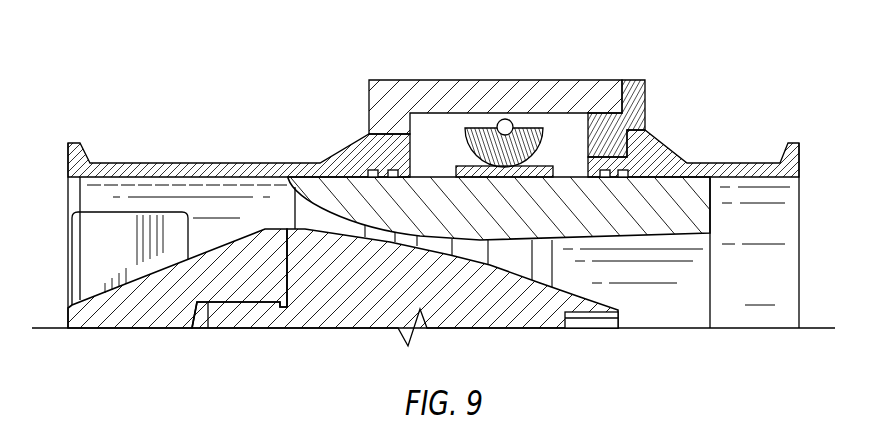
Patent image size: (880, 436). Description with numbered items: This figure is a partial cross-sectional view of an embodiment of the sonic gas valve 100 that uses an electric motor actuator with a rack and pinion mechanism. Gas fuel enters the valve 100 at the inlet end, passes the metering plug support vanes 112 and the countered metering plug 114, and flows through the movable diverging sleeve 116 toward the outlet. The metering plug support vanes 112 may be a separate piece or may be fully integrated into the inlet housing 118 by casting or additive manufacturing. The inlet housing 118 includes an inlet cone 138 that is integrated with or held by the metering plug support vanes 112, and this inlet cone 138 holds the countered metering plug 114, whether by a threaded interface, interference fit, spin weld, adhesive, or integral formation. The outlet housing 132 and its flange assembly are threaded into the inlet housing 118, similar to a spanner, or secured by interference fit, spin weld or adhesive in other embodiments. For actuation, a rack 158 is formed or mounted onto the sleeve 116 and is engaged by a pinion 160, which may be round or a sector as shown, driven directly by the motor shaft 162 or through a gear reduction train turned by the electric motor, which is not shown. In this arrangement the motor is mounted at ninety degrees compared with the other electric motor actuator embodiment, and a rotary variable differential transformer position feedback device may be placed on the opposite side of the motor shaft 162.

The sonic gas valve 100 is at (147, 57).
The metering plug support vanes 112 is at (102, 237).
The countered metering plug 114 is at (332, 267).
The movable diverging sleeve 116 is at (683, 215).
The inlet housing 118 is at (162, 170).
The outlet housing 132 is at (757, 163).
The inlet cone 138 is at (227, 270).
The rack 158 is at (577, 164).
The pinion 160 is at (520, 128).
The motor shaft 162 is at (504, 119).